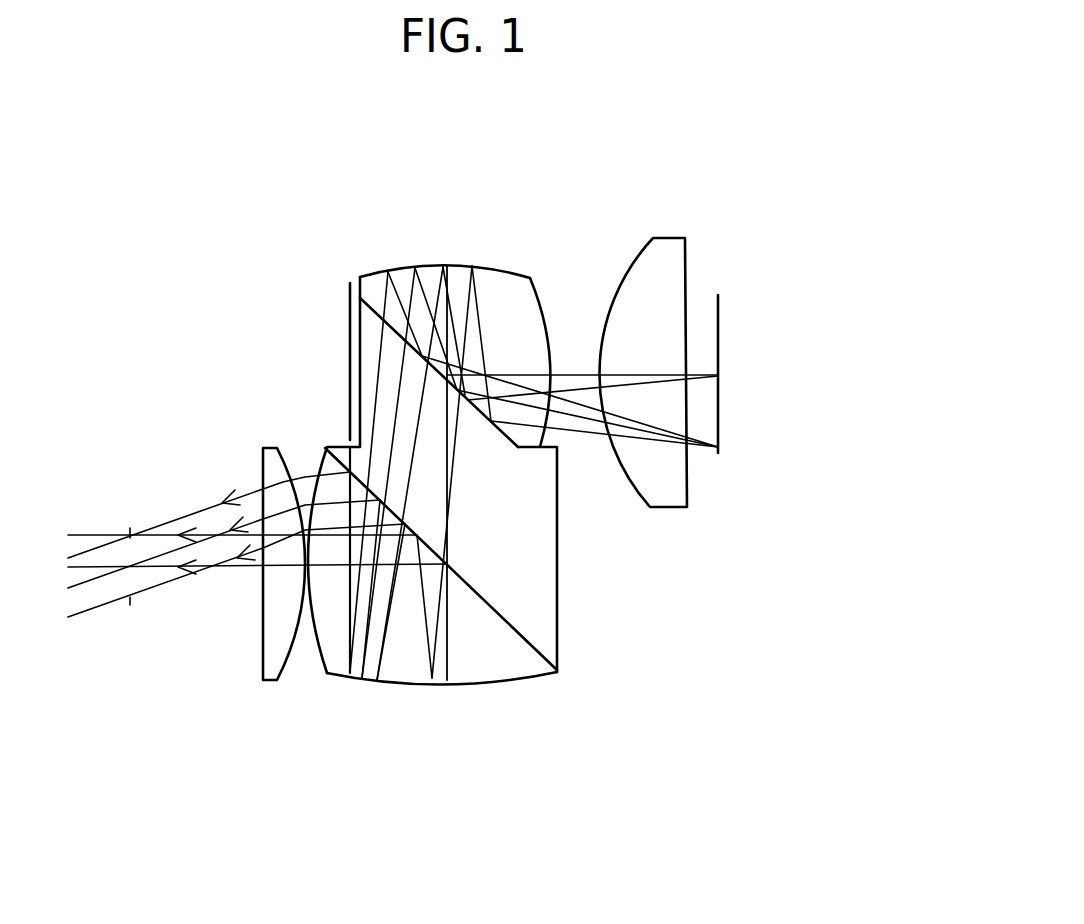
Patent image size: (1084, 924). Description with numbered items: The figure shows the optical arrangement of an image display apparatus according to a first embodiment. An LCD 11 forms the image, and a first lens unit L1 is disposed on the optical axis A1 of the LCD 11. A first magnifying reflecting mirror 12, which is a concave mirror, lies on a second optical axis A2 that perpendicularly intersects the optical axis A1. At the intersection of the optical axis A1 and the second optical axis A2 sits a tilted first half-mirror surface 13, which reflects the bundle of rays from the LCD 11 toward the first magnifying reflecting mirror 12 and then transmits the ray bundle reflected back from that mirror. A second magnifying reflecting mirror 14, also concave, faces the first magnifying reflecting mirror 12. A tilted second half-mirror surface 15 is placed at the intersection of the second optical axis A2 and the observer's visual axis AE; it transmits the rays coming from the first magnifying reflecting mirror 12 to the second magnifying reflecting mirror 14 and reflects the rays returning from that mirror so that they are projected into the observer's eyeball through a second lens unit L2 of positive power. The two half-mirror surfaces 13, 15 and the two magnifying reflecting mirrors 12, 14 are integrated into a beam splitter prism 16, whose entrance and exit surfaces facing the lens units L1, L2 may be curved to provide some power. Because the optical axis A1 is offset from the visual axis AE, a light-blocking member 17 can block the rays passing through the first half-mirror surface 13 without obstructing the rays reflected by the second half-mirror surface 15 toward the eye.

The LCD 11 is at (722, 318).
The first magnifying reflecting mirror 12 is at (487, 266).
The first half-mirror surface 13 is at (377, 312).
The second magnifying reflecting mirror 14 is at (509, 683).
The second half-mirror surface 15 is at (517, 628).
The beam splitter prism 16 is at (535, 555).
The light-blocking member 17 is at (347, 297).
The first lens unit L1 is at (673, 238).
The second lens unit L2 is at (270, 683).
The optical axis of the LCD A1 is at (575, 373).
The second optical axis A2 is at (447, 453).
The observer's visual axis AE is at (337, 567).